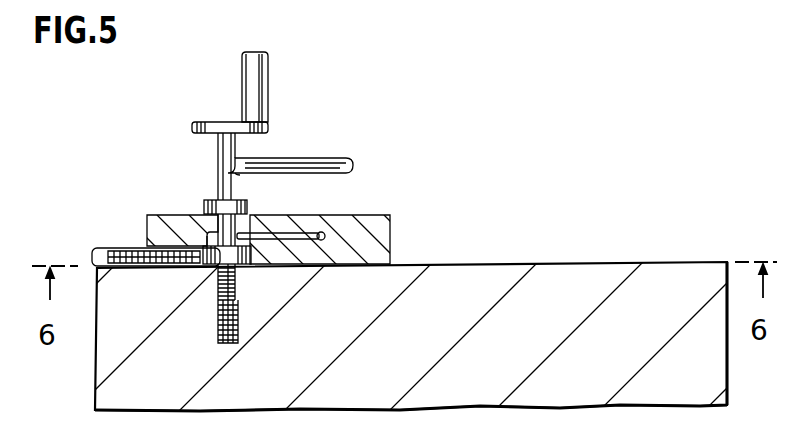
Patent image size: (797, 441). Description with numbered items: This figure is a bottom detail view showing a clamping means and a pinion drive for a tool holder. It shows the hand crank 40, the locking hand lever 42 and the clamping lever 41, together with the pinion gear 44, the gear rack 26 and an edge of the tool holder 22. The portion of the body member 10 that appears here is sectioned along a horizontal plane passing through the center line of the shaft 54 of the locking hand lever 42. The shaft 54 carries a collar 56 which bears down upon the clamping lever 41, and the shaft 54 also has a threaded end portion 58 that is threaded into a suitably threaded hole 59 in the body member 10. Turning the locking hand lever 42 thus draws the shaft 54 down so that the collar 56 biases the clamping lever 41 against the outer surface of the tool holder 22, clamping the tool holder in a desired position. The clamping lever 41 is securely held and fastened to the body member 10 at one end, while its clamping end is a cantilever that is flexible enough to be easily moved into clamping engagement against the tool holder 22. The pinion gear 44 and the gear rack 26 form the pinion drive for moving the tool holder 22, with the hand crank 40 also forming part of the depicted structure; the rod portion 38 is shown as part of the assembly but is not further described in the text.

The body member 10 is at (574, 263).
The tool holder 22 is at (103, 249).
The gear rack 26 is at (144, 247).
The threaded bolt shaft 38 is at (218, 163).
The hand crank 40 is at (268, 72).
The clamping lever 41 is at (165, 214).
The locking hand lever 42 is at (320, 157).
The pinion gear 44 is at (240, 260).
The shaft of the locking hand lever 54 is at (257, 228).
The collar 56 is at (212, 200).
The threaded end portion 58 is at (218, 286).
The threaded hole 59 is at (236, 327).